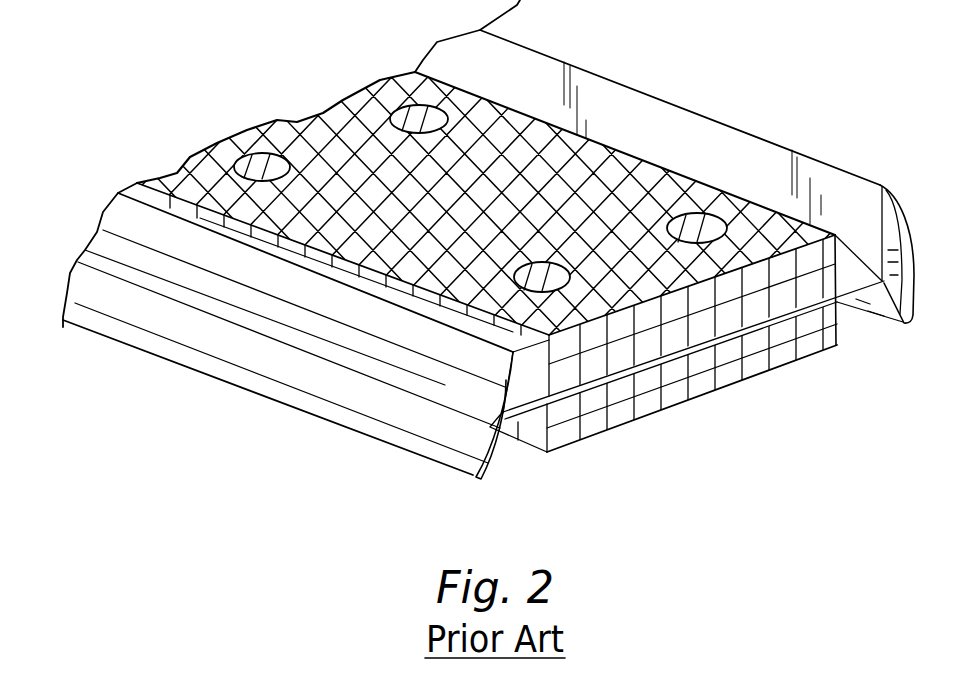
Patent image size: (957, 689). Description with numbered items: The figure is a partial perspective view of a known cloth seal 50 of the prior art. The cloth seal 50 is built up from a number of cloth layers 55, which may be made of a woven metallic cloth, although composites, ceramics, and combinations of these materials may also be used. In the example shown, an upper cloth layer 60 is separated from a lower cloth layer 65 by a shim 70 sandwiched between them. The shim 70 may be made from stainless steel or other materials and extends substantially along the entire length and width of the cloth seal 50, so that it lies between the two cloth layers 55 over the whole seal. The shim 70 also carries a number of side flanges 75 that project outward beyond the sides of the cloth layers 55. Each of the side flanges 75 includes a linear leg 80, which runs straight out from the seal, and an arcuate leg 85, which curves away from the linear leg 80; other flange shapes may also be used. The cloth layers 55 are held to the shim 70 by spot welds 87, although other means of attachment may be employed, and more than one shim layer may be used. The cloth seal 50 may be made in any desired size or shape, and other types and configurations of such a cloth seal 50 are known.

The cloth seal 50 is at (200, 105).
The cloth layers 55 is at (297, 110).
The upper cloth layer 60 is at (390, 80).
The lower cloth layer 65 is at (603, 418).
The shim 70 is at (653, 367).
The side flanges 75 is at (134, 352).
The linear leg 80 is at (728, 157).
The arcuate leg 85 is at (340, 403).
The spot welds 87 is at (233, 157).